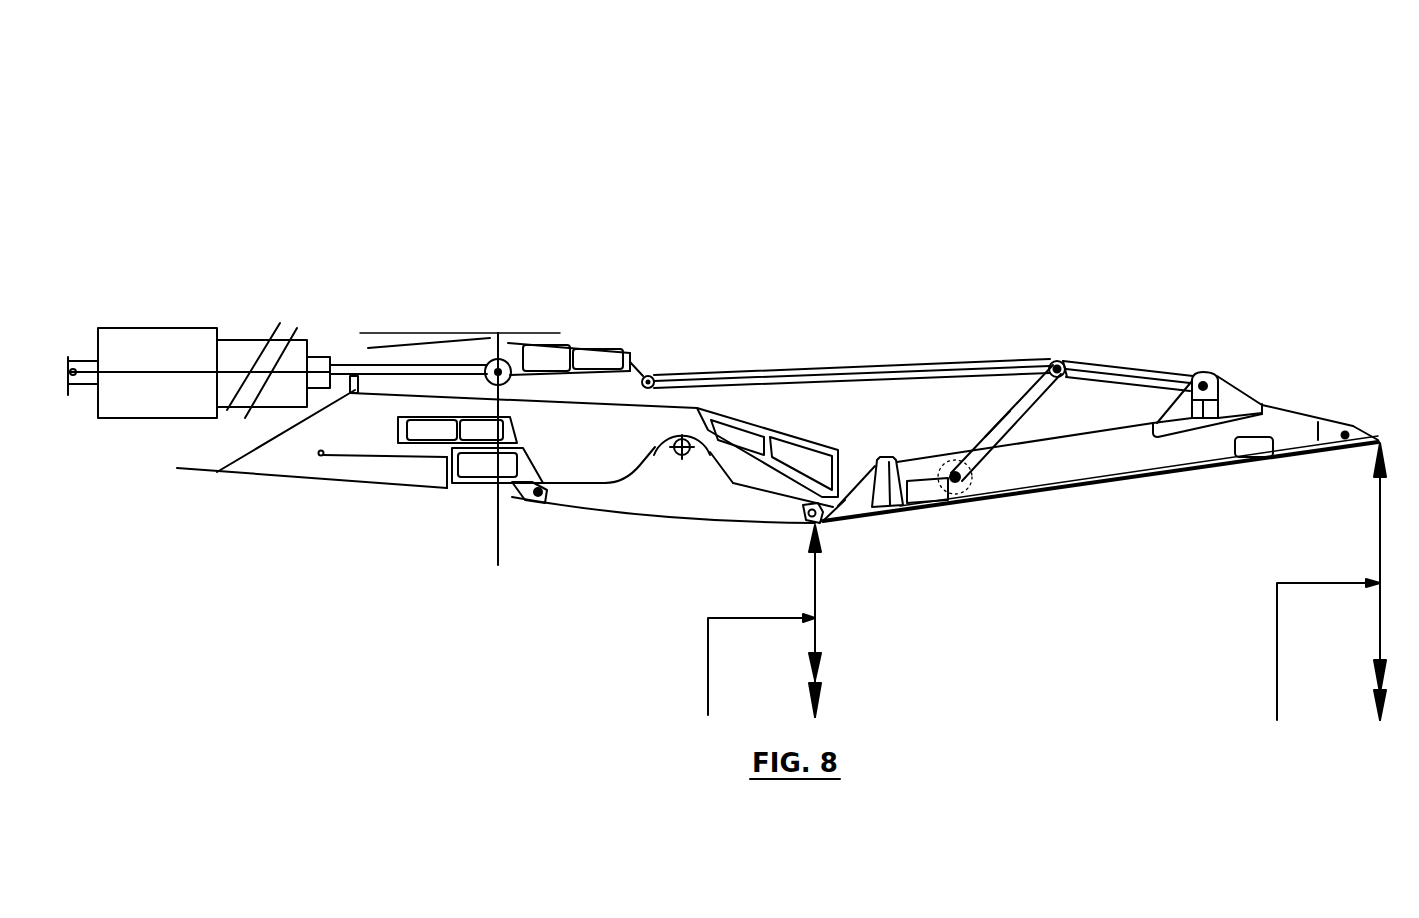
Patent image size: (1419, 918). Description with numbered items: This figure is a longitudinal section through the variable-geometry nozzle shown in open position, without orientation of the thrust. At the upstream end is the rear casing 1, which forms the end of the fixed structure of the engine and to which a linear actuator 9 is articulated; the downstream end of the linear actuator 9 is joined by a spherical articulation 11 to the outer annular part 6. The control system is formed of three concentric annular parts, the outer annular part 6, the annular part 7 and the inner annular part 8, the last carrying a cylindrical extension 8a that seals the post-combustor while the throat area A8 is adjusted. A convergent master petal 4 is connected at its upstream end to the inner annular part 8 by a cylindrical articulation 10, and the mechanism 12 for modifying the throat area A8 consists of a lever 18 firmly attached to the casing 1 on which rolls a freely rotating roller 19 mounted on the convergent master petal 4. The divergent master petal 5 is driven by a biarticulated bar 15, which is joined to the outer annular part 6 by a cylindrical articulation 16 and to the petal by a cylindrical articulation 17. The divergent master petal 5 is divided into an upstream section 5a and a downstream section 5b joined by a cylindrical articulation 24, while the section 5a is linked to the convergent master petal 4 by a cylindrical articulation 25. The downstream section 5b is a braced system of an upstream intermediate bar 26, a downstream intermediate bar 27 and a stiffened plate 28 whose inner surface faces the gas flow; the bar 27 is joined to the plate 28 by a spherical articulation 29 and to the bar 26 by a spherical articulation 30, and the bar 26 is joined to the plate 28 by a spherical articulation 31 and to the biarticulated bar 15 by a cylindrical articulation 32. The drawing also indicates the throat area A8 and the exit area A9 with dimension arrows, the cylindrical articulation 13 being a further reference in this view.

The rear casing 1 is at (270, 437).
The convergent master petal 4 is at (630, 500).
The divergent master petal 5 is at (1203, 471).
The upstream section of divergent master petal 5a is at (862, 518).
The downstream section of divergent master petal 5b is at (1297, 412).
The outer annular part 6 is at (573, 345).
The annular part 7 is at (412, 408).
The inner annular part 8 is at (477, 487).
The cylindrical extension 8a is at (348, 462).
The linear actuator 9 is at (147, 353).
The cylindrical articulation 10 is at (541, 504).
The spherical articulation 11 is at (496, 370).
The mechanism for modifying the A8 throat area 12 is at (743, 717).
The pivot axis 13 is at (1277, 720).
The biarticulated bar 15 is at (827, 373).
The cylindrical articulation 16 is at (645, 377).
The cylindrical articulation 17 is at (1054, 366).
The lever 18 is at (760, 418).
The roller 19 is at (682, 423).
The cylindrical articulation 24 is at (887, 452).
The cylindrical articulation 25 is at (872, 717).
The upstream intermediate bar 26 is at (1000, 427).
The downstream intermediate bar 27 is at (1112, 373).
The stiffened plate 28 is at (1090, 458).
The spherical articulation 29 is at (1203, 385).
The spherical articulation 30 is at (1057, 368).
The spherical articulation 31 is at (955, 481).
The cylindrical articulation 32 is at (1059, 369).
The throat area A8 is at (796, 621).
The angle A9 is at (1370, 720).